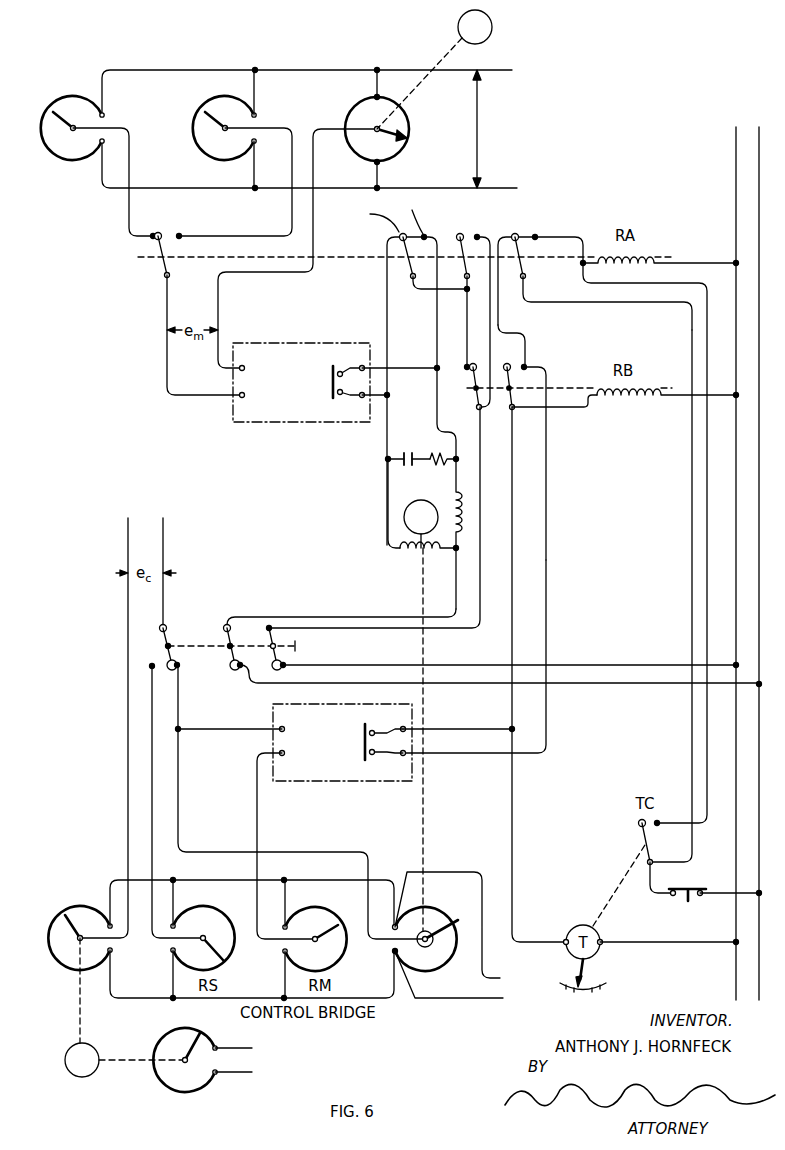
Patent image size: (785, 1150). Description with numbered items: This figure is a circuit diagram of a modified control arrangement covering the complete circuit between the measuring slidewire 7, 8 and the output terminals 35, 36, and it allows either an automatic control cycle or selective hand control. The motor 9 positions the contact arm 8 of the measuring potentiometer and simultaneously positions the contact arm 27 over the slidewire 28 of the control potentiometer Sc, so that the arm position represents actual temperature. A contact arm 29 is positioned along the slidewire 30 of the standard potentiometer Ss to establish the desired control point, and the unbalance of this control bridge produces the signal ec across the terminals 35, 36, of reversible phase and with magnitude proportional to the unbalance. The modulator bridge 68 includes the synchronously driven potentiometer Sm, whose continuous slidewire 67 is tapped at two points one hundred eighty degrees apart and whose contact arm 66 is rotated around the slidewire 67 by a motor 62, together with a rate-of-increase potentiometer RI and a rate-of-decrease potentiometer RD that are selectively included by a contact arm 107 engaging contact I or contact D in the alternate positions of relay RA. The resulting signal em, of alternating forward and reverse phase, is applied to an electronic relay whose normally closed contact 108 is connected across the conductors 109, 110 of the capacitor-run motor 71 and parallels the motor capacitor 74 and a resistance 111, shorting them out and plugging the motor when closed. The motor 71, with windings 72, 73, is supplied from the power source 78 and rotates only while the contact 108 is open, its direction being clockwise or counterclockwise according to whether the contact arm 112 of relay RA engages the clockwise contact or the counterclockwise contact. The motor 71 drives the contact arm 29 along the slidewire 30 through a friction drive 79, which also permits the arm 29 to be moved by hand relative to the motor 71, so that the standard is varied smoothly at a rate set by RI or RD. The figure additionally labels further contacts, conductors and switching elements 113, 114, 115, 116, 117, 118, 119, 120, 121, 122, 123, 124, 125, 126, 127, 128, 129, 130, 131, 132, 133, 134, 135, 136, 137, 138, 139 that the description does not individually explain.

The measuring slidewire 7 is at (175, 1073).
The contact arm 8 is at (200, 1048).
The motor 9 is at (88, 1077).
The contact arm 27 is at (78, 939).
The slidewire 28 is at (214, 939).
The contact arm 29 is at (432, 941).
The slidewire 30 is at (448, 936).
The terminal 35 is at (108, 719).
The terminal 36 is at (161, 564).
The motor 62 is at (492, 27).
The contact arm 66 is at (394, 136).
The continuous slidewire 67 is at (357, 102).
The modulator bridge 68 is at (292, 105).
The capacitor-run motor 71 is at (358, 517).
The winding 72 is at (451, 495).
The winding 73 is at (412, 556).
The capacitor 74 is at (408, 456).
The power source 78 is at (759, 156).
The friction drive 79 is at (430, 947).
The contact arm 107 is at (155, 270).
The normally closed contact 108 is at (334, 392).
The conductor 109 is at (387, 440).
The conductor 110 is at (437, 402).
The resistance 111 is at (438, 453).
The contact arm 112 is at (410, 280).
The switch blade 113 is at (458, 251).
The conductor 114 is at (477, 235).
The switch blade 115 is at (513, 233).
The conductor 116 is at (528, 274).
The conductor 117 is at (538, 236).
The conductor 118 is at (525, 365).
The switch blade 119 is at (511, 364).
The contact 120 is at (464, 367).
The switch blade 121 is at (476, 397).
The conductor 122 is at (368, 630).
The switch blade 123 is at (288, 659).
The conductor 124 is at (603, 664).
The conductor 125 is at (610, 686).
The switch blade 126 is at (234, 670).
The conductor 127 is at (337, 616).
The switch 128 is at (185, 632).
The contact 129 is at (171, 649).
The contact 130 is at (178, 670).
The contact 131 is at (152, 664).
The relay contacts ER2 132 is at (364, 750).
The conductor 133 is at (707, 826).
The conductor 134 is at (690, 558).
The conductor 135 is at (650, 895).
The reset push button 136 is at (695, 889).
The conductor 137 is at (652, 944).
The conductor 138 is at (512, 636).
The conductor 139 is at (547, 610).